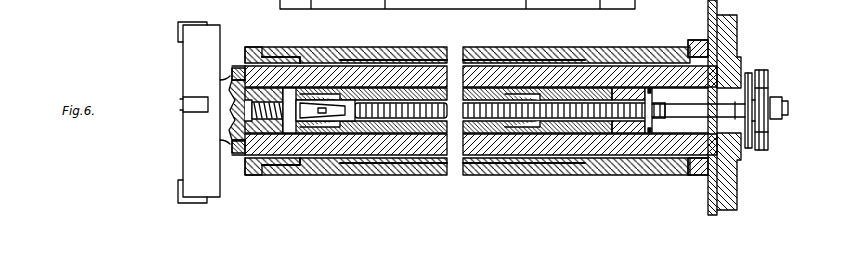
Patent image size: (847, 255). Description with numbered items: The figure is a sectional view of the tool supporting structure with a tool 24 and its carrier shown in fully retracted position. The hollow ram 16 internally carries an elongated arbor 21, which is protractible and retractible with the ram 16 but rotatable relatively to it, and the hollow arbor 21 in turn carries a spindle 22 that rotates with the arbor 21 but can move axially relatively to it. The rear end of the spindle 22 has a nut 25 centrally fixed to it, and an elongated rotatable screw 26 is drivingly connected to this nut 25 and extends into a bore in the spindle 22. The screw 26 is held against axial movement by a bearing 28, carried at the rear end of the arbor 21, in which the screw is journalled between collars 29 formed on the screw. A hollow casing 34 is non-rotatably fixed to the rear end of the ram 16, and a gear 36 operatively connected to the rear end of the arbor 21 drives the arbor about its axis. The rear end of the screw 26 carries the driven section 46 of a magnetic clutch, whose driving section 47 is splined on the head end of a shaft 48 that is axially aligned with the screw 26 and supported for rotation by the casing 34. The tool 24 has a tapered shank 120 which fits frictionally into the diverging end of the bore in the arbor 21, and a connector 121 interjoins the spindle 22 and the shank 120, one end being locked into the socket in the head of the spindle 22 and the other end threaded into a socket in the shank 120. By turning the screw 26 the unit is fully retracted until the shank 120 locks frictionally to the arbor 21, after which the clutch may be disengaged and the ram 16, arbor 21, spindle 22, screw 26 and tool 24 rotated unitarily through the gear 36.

The ram 16 is at (383, 48).
The arbor 21 is at (441, 48).
The spindle 22 is at (362, 96).
The tool 24 is at (183, 57).
The nut 25 is at (635, 130).
The screw 26 is at (400, 104).
The bearing 28 is at (757, 125).
The collars 29 is at (718, 96).
The casing 34 is at (708, 14).
The gear 36 is at (740, 22).
The driven section 46 is at (749, 74).
The driving section 47 is at (763, 72).
The shaft 48 is at (784, 101).
The tapered shank 120 is at (254, 48).
The connector 121 is at (290, 90).